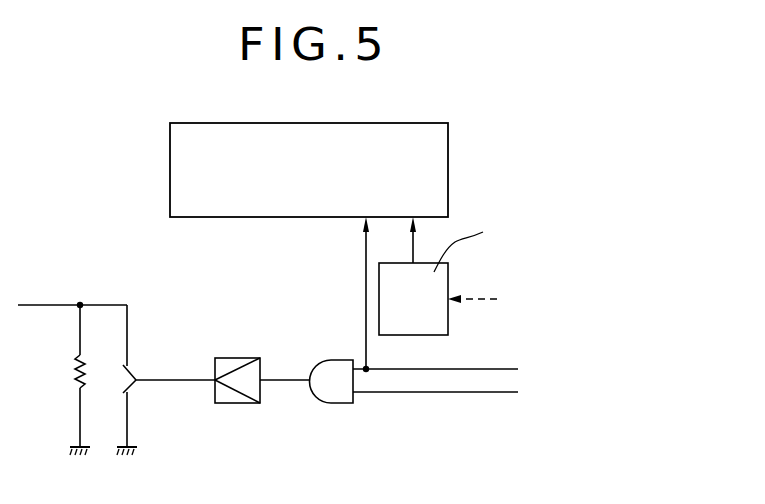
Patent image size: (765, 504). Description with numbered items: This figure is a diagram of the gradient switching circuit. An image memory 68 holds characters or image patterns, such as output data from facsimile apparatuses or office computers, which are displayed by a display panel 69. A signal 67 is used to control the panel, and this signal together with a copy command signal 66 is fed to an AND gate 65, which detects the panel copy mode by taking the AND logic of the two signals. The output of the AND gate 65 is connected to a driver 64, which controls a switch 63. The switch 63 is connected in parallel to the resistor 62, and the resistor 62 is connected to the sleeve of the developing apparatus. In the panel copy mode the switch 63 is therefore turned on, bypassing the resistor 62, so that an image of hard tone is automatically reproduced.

The resistor 62 is at (76, 369).
The switch 63 is at (129, 373).
The driver 64 is at (232, 404).
The AND gate 65 is at (345, 404).
The copy command signal 66 is at (484, 393).
The signal 67 is at (484, 368).
The image memory 68 is at (449, 272).
The display panel 69 is at (449, 163).